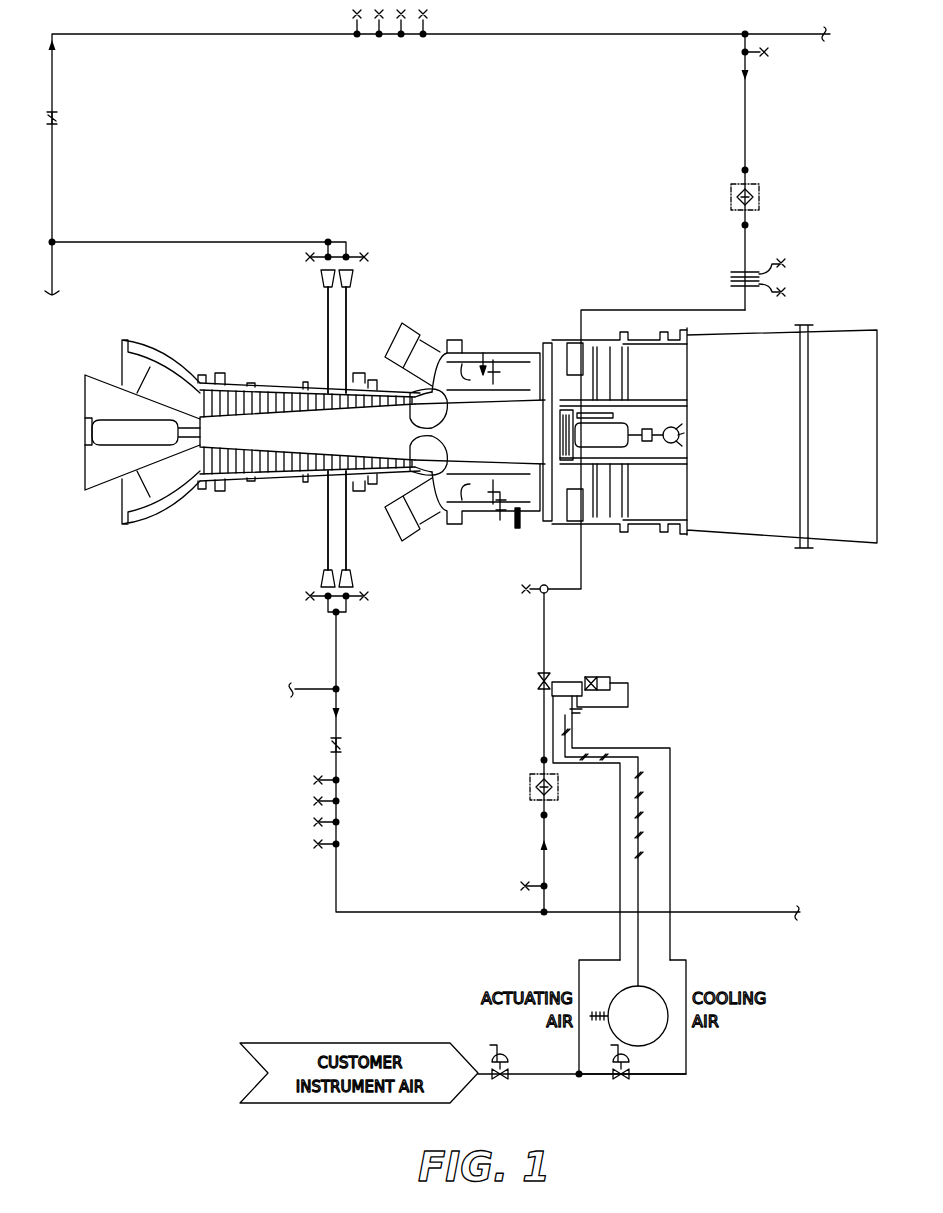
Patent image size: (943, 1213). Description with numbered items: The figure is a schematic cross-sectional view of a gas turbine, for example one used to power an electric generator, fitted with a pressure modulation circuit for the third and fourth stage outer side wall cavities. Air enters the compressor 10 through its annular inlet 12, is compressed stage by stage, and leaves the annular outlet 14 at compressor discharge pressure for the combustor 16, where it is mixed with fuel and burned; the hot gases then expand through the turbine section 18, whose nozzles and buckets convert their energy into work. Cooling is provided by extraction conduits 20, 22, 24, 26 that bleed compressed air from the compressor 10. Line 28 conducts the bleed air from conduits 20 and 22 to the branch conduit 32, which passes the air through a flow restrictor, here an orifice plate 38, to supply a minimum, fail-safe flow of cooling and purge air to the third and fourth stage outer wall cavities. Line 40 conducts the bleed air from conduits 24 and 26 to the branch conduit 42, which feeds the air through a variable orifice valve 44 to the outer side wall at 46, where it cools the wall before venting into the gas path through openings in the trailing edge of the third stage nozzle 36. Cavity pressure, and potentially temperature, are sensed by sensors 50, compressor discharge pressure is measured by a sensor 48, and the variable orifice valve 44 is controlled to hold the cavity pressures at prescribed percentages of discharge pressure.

The compressor 10 is at (199, 542).
The annular inlet 12 is at (107, 507).
The annular outlet 14 is at (396, 344).
The combustor 16 is at (410, 312).
The turbine section 18 is at (518, 372).
The extraction conduit 20 is at (328, 322).
The extraction conduit 22 is at (347, 325).
The extraction conduit 24 is at (328, 520).
The extraction conduit 26 is at (347, 556).
The line 28 is at (197, 242).
The branch conduit 32 is at (745, 115).
The third stage nozzle 36 is at (531, 346).
The orifice plate 38 is at (798, 246).
The line 40 is at (336, 883).
The branch conduit 42 is at (542, 834).
The variable orifice valve 44 is at (570, 682).
The outer side wall 46 is at (517, 522).
The sensor 48 is at (450, 340).
The sensors 50 is at (521, 512).